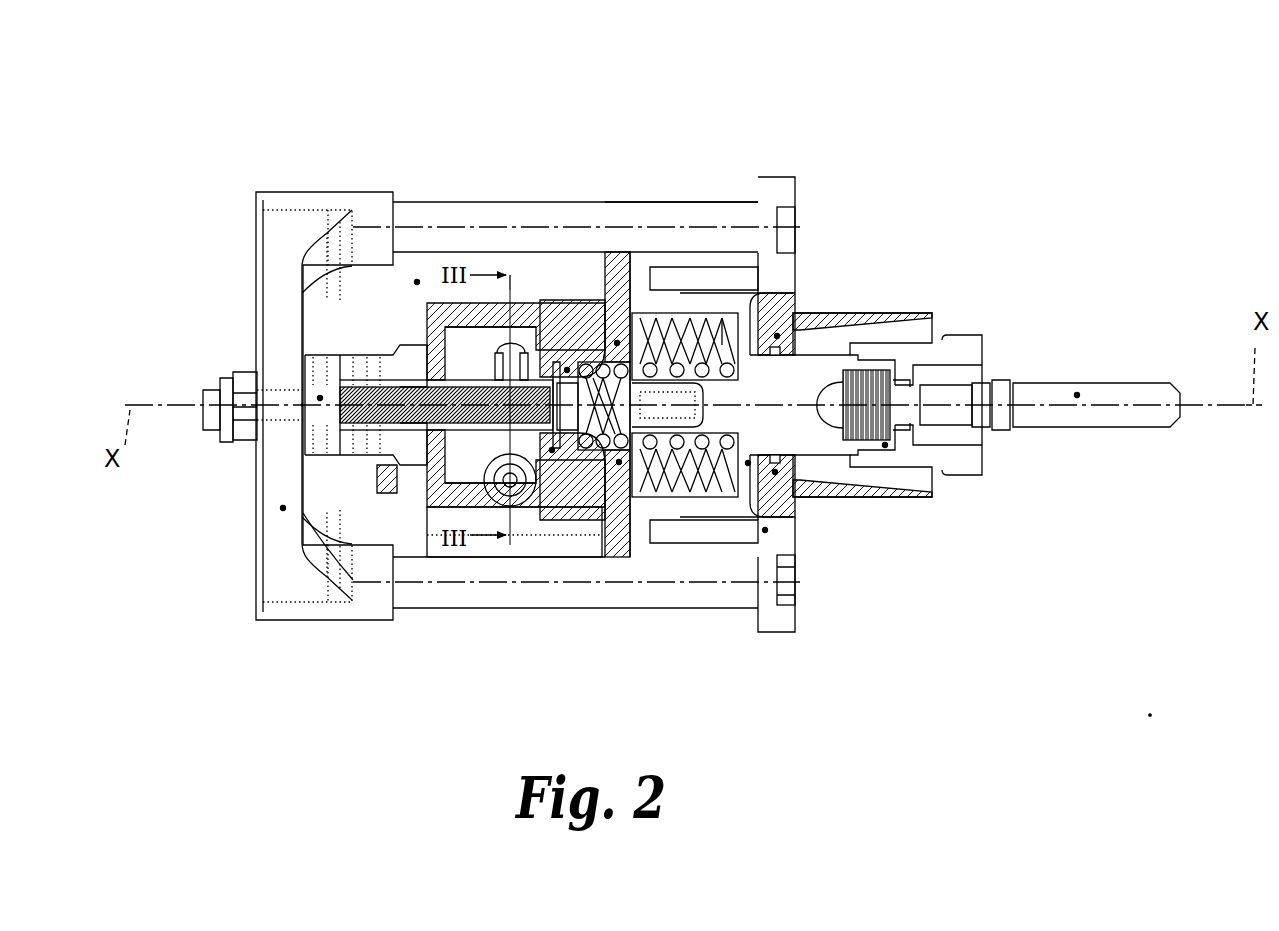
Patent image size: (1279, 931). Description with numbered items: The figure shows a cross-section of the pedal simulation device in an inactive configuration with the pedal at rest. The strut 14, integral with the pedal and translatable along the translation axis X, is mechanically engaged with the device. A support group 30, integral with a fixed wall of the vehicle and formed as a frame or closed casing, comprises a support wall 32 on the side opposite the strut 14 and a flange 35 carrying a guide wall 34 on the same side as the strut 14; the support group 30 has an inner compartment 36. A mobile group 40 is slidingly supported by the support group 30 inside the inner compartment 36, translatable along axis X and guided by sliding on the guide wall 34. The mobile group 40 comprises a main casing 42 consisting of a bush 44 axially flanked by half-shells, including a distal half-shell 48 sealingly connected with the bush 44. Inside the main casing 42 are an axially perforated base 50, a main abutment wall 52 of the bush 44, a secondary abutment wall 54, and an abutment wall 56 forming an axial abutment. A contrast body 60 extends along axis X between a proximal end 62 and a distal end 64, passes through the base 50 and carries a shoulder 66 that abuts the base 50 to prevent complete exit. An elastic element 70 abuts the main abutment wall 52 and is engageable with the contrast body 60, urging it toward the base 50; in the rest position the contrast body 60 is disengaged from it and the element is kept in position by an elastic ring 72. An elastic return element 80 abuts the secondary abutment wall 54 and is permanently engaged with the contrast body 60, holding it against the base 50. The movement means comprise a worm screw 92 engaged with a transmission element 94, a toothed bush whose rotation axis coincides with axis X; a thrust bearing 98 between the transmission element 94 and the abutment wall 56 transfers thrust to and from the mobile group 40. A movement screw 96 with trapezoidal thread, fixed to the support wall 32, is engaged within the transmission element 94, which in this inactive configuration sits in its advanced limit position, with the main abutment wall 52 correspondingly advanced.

The strut 14 is at (1077, 395).
The support group 30 is at (797, 152).
The support wall 32 is at (283, 508).
The guide wall 34 is at (765, 530).
The flange 35 is at (800, 200).
The inner compartment 36 is at (417, 282).
The mobile group 40 is at (490, 548).
The main casing 42 is at (766, 285).
The bush 44 is at (660, 470).
The distal half-shell 48 is at (352, 580).
The base 50 is at (777, 336).
The main abutment wall 52 is at (617, 343).
The secondary abutment wall 54 is at (567, 370).
The abutment wall 56 is at (552, 452).
The contrast body 60 is at (885, 445).
The proximal end 62 is at (983, 467).
The distal end 64 is at (420, 440).
The shoulder 66 is at (842, 463).
The elastic element 70 is at (748, 463).
The elastic ring 72 is at (720, 313).
The elastic return element 80 is at (606, 393).
The worm screw 92 is at (514, 506).
The transmission element 94 is at (488, 350).
The movement screw 96 is at (320, 398).
The thrust bearing 98 is at (526, 342).